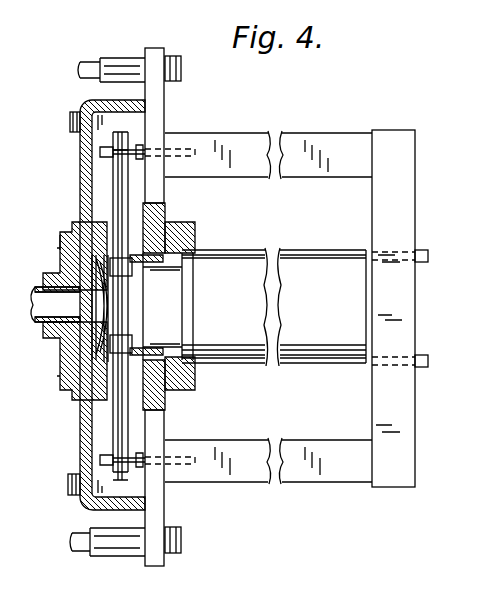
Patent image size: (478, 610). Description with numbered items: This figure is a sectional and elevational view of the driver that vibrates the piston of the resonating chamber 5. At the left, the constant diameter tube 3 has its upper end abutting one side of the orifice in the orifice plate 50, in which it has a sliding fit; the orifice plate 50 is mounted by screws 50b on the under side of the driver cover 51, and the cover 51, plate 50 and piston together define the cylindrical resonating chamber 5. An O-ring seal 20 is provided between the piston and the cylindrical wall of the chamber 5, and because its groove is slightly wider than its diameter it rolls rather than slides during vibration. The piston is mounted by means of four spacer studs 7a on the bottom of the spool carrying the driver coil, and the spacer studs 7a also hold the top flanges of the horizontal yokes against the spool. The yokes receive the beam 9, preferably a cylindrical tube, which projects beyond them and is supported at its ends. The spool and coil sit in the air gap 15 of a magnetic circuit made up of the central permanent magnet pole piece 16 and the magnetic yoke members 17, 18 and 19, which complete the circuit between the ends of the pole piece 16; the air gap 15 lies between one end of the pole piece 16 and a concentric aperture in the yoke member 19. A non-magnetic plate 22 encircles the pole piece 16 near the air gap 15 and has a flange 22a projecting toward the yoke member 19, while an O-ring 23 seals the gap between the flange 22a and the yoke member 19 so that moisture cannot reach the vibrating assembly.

The constant diameter tube 3 is at (34, 292).
The cylindrical resonating chamber 5 is at (62, 355).
The spacer studs 7a is at (100, 266).
The beam 9 is at (92, 428).
The air gap 15 is at (180, 256).
The central permanent magnet pole piece 16 is at (275, 248).
The magnetic yoke member 17 is at (375, 224).
The magnetic yoke member 18 is at (310, 160).
The magnetic yoke member 19 is at (156, 418).
The O-ring seal 20 is at (113, 420).
The non-magnetic plate 22 is at (196, 384).
The flange 22a is at (185, 224).
The O-ring 23 is at (172, 212).
The orifice plate 50 is at (60, 233).
The screws 50b is at (60, 250).
The driver cover 51 is at (80, 172).